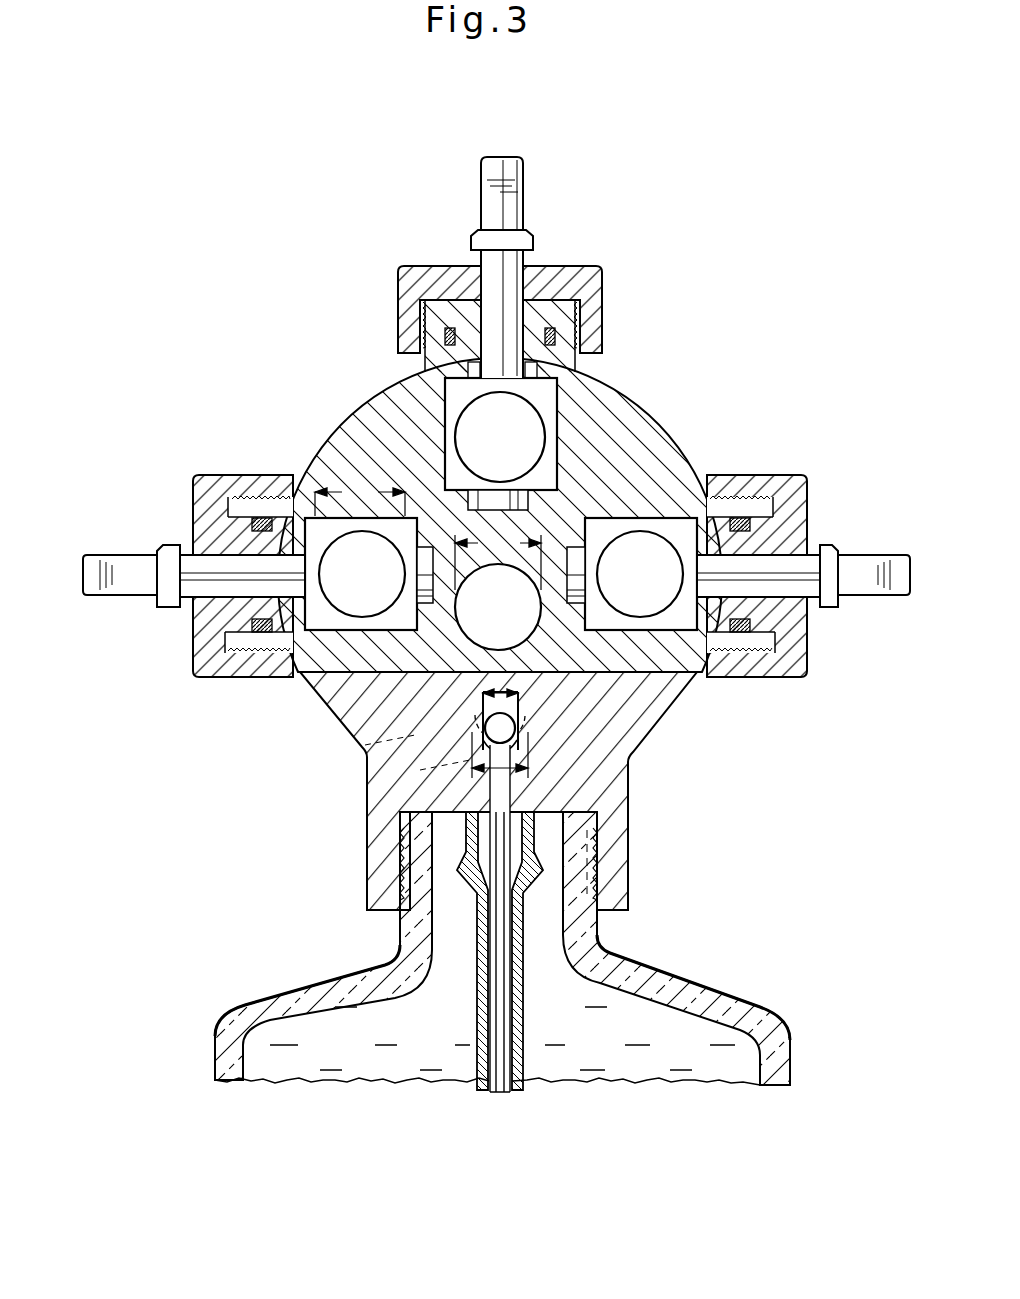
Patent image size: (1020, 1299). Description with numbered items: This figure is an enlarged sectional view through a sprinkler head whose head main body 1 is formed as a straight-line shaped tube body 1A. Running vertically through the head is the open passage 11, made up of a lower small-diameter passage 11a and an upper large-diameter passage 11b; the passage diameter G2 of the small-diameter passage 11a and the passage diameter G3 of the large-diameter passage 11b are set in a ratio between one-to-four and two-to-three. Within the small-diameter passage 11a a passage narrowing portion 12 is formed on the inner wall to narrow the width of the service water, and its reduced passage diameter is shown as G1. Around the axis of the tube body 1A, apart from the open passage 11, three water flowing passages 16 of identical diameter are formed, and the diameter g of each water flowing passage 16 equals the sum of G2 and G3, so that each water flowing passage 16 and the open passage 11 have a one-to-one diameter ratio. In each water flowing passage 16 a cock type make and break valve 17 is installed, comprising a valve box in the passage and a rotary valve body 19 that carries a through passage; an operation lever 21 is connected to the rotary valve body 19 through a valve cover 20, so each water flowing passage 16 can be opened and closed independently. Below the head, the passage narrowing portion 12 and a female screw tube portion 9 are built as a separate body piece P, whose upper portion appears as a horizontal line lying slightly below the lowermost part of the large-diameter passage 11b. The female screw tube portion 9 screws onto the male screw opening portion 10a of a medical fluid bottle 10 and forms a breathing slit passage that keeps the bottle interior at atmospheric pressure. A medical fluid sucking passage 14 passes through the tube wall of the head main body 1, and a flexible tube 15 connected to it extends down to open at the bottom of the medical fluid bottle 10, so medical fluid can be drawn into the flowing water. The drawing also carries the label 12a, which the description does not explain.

The head main body 1 is at (706, 688).
The straight-line shaped tube body 1A is at (611, 381).
The female screw tube portion 9 is at (630, 880).
The medical fluid bottle 10 is at (305, 984).
The male screw opening portion 10a is at (402, 870).
The open passage 11 is at (753, 728).
The small-diameter passage 11a is at (525, 760).
The large-diameter passage 11b is at (520, 716).
The passage narrowing portion 12 is at (363, 740).
The valve chamber 12a is at (384, 772).
The medical fluid sucking passage 14 is at (477, 915).
The flexible tube 15 is at (520, 1054).
The water flowing passage 16 is at (345, 553).
The cock type make and break valve 17 is at (470, 244).
The rotary valve body 19 is at (466, 437).
The valve cover 20 is at (398, 289).
The operation lever 21 is at (483, 176).
The separate body piece P is at (367, 835).
The diameter of water flowing passage g is at (360, 496).
The passage diameter of passage narrowing portion G1 is at (486, 690).
The passage diameter of small-diameter passage G2 is at (530, 797).
The passage diameter of large-diameter passage G3 is at (498, 558).